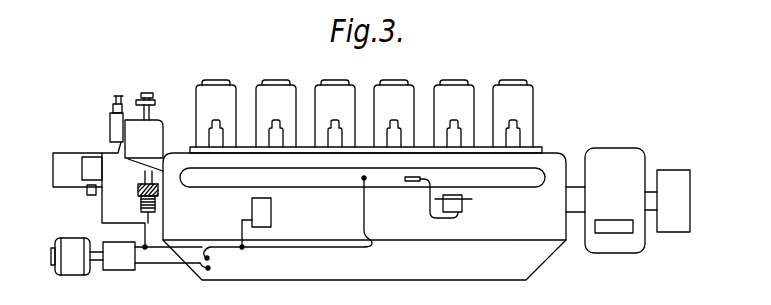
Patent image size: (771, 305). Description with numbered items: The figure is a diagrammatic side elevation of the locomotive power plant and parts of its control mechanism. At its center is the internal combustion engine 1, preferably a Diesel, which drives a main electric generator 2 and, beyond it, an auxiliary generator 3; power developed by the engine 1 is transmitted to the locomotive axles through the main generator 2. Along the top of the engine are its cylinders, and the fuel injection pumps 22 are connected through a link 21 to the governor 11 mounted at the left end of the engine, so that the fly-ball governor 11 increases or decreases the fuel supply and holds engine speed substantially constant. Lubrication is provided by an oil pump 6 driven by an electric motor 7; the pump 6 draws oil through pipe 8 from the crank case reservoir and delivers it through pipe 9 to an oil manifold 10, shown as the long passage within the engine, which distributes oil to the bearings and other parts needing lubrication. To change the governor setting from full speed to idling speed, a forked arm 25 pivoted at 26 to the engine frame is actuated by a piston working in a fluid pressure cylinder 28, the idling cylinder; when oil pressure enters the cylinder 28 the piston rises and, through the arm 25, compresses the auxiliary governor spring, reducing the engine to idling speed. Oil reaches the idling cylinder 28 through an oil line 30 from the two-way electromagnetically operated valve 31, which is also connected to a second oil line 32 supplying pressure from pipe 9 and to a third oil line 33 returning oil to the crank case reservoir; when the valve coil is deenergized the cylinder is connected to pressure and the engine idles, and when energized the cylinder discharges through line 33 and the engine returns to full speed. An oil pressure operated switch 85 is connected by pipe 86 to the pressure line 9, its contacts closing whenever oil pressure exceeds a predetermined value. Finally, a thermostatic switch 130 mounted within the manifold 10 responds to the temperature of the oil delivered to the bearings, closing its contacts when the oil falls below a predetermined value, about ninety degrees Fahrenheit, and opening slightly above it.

The internal combustion engine 1 is at (452, 80).
The main electric generator 2 is at (627, 148).
The auxiliary generator 3 is at (673, 170).
The oil pump 6 is at (125, 263).
The electric motor 7 is at (55, 254).
The pipe 8 is at (167, 265).
The pipe 9 is at (333, 247).
The oil manifold 10 is at (320, 183).
The governor 11 is at (157, 118).
The link 21 is at (352, 113).
The fuel injection pumps 22 is at (337, 126).
The forked arm 25 is at (116, 98).
The pivot 26 is at (142, 93).
The fluid pressure cylinder 28 is at (110, 118).
The oil line 30 is at (83, 153).
The two-way electromagnetically operated valve 31 is at (87, 192).
The oil line 32 is at (102, 215).
The oil line 33 is at (137, 192).
The oil pressure operated switch 85 is at (272, 222).
The pipe 86 is at (244, 220).
The thermostatic switch 130 is at (458, 210).